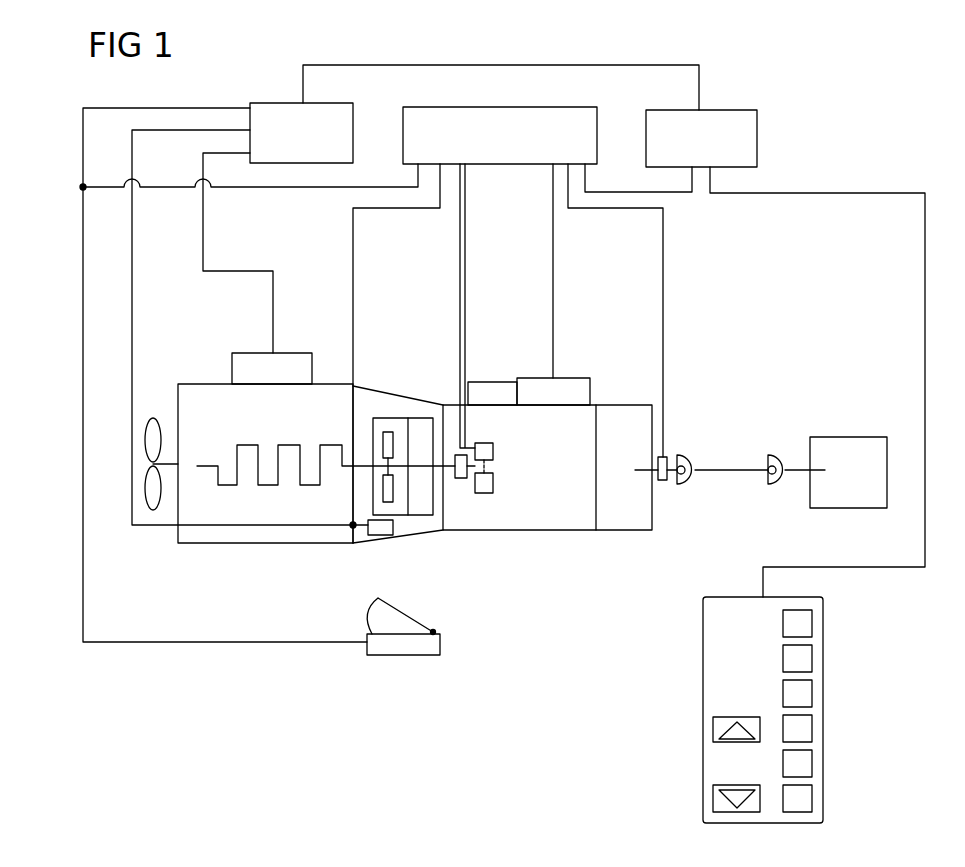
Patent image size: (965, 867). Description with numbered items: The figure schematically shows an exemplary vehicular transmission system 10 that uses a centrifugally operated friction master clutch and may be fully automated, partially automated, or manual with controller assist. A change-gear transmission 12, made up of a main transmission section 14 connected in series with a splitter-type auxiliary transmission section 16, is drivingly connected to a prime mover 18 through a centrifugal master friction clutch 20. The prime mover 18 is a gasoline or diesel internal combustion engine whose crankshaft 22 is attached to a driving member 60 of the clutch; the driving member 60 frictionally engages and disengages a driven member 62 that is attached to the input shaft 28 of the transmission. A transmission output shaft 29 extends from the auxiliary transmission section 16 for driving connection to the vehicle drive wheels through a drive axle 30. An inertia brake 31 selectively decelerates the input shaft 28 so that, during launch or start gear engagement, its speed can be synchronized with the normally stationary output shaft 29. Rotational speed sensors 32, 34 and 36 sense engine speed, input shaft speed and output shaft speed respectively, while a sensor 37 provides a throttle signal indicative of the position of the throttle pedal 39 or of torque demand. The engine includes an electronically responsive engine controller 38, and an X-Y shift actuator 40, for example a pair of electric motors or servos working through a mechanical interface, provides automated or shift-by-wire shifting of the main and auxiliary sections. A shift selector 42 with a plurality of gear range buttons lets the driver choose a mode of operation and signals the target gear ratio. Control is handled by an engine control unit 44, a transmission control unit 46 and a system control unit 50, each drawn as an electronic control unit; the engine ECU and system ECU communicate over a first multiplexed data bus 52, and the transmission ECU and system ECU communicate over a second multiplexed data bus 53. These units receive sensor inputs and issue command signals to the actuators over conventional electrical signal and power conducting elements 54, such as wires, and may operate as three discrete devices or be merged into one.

The vehicular transmission system 10 is at (710, 360).
The change-gear transmission 12 is at (505, 532).
The main transmission section 14 is at (555, 530).
The splitter-type auxiliary transmission section 16 is at (630, 530).
The prime mover 18 is at (197, 545).
The centrifugal master friction clutch 20 is at (388, 432).
The crankshaft 22 is at (241, 445).
The input shaft 28 is at (453, 478).
The transmission output shaft 29 is at (636, 470).
The drive axle 30 is at (838, 508).
The inertia brake 31 is at (493, 443).
The engine rotational speed sensor 32 is at (377, 543).
The input shaft rotational speed sensor 34 is at (462, 478).
The output shaft rotational speed sensor 36 is at (667, 457).
The throttle position sensor 37 is at (393, 655).
The engine controller 38 is at (253, 353).
The throttle pedal 39 is at (433, 632).
The X-Y shift actuator 40 is at (533, 378).
The shift selector 42 is at (703, 738).
The engine control unit 44 is at (278, 103).
The transmission control unit 46 is at (481, 107).
The system control unit 50 is at (757, 138).
The first multiplexed data bus 52 is at (676, 65).
The second multiplexed data bus 53 is at (680, 195).
The electrical signal and power conducting elements 54 is at (84, 345).
The driving member 60 is at (375, 418).
The driven member 62 is at (400, 430).